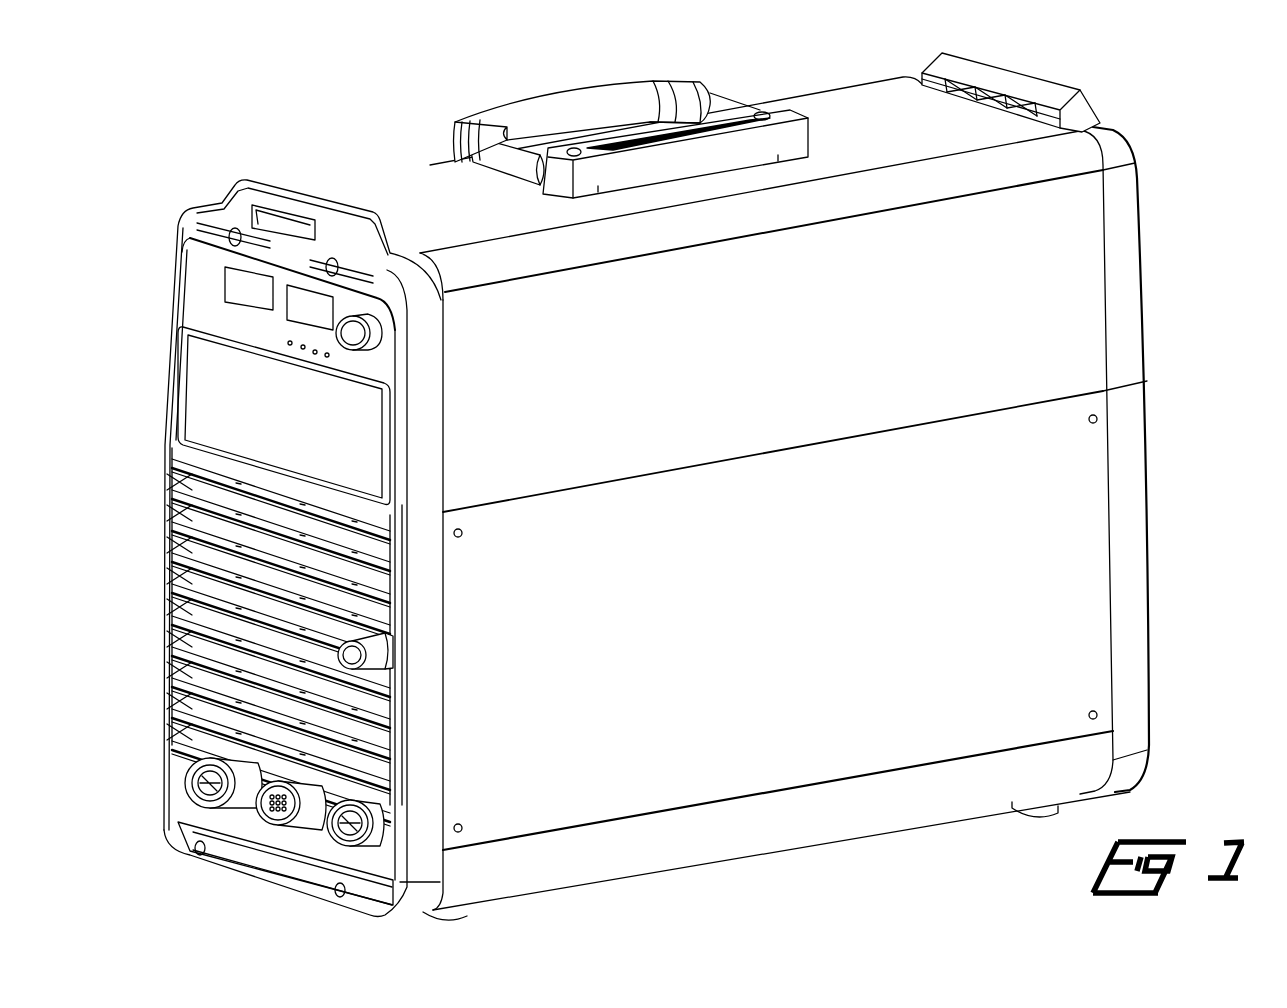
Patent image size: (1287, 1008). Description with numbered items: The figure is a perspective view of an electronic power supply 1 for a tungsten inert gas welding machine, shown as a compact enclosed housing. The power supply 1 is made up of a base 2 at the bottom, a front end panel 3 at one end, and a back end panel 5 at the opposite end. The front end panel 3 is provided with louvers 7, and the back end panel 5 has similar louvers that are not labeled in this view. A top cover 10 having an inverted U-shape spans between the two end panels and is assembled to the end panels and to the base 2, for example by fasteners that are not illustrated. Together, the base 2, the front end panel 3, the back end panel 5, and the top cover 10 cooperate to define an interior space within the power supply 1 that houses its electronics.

The electronic power supply 1 is at (1208, 288).
The base 2 is at (940, 810).
The front end panel 3 is at (168, 512).
The back end panel 5 is at (1152, 473).
The louvers 7 is at (203, 472).
The top cover 10 is at (790, 565).